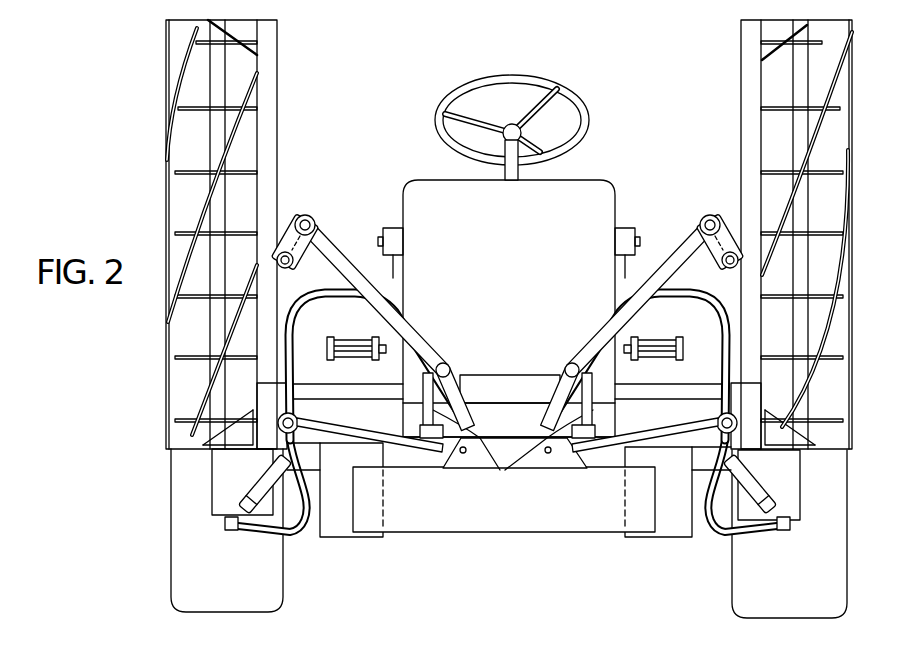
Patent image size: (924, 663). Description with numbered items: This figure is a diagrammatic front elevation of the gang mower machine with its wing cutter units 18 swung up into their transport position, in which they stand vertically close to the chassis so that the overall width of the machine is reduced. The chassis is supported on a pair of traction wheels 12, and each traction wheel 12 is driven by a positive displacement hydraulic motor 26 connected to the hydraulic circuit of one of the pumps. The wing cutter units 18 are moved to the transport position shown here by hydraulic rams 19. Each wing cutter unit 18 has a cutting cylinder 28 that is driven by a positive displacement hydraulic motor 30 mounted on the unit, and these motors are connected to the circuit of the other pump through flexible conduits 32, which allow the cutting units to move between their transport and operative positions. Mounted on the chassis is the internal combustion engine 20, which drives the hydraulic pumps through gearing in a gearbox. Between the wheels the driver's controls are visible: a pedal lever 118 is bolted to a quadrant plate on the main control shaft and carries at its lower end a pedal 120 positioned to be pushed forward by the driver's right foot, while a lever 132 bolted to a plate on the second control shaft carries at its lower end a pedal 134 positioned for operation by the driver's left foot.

The traction wheels 12 is at (270, 583).
The wing cutter units 18 is at (180, 150).
The hydraulic rams 19 is at (502, 470).
The internal combustion engine 20 is at (521, 291).
The positive displacement hydraulic motor 26 is at (348, 525).
The cutting cylinder 28 is at (183, 70).
The positive displacement hydraulic motor 30 is at (222, 479).
The flexible conduits 32 is at (278, 477).
The pedal lever 118 is at (378, 252).
The pedal 120 is at (355, 364).
The lever 132 is at (634, 258).
The pedal 134 is at (666, 364).